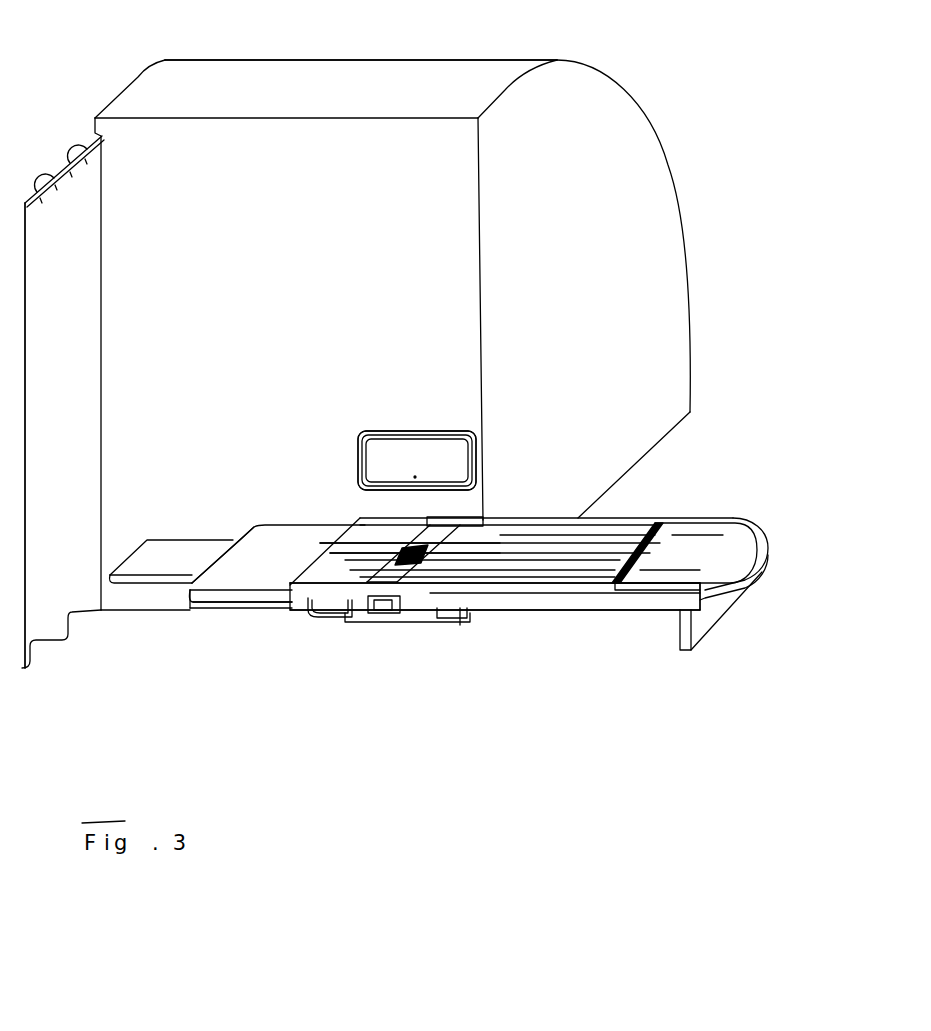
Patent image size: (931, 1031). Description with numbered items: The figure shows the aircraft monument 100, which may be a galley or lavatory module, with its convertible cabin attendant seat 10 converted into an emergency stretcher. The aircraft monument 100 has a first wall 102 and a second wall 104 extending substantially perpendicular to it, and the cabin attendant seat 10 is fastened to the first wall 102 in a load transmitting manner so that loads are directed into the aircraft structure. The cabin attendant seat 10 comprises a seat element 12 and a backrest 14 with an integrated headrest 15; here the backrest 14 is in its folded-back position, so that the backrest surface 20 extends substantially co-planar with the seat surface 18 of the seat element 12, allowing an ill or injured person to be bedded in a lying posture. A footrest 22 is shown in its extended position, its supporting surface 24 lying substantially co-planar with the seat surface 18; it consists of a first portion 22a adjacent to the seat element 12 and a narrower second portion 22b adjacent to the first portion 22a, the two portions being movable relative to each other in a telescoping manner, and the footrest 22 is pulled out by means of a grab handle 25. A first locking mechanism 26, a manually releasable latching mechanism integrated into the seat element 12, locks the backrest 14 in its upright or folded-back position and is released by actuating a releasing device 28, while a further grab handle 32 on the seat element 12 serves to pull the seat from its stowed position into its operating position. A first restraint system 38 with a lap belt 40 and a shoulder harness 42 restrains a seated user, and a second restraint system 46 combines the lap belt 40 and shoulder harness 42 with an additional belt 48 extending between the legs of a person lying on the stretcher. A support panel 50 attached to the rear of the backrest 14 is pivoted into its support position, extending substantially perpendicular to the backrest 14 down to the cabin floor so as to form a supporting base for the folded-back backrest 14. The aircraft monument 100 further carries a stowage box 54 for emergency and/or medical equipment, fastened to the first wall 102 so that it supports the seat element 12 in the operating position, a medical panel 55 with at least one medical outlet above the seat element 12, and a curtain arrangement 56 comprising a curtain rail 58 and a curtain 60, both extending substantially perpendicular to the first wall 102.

The aircraft monument 100 is at (615, 50).
The first wall 102 is at (292, 141).
The second wall 104 is at (628, 148).
The cabin attendant seat 10 is at (519, 477).
The seat element 12 is at (360, 518).
The backrest 14 is at (660, 520).
The headrest 15 is at (733, 518).
The seat surface 18 is at (307, 618).
The backrest surface 20 is at (536, 583).
The footrest 22 is at (190, 612).
The first portion 22a is at (275, 540).
The second portion 22b is at (135, 587).
The supporting surface 24 is at (238, 557).
The grab handle 25 is at (151, 575).
The first locking mechanism 26 is at (400, 622).
The releasing device 28 is at (380, 614).
The further grab handle 32 is at (326, 618).
The first restraint system 38 is at (562, 505).
The lap belt 40 is at (430, 530).
The shoulder harness 42 is at (610, 535).
The second restraint system 46 is at (397, 511).
The additional belt 48 is at (230, 603).
The support panel 50 is at (708, 618).
The stowage box 54 is at (468, 625).
The medical panel 55 is at (402, 440).
The curtain arrangement 56 is at (132, 196).
The curtain rail 58 is at (73, 146).
The curtain 60 is at (82, 292).